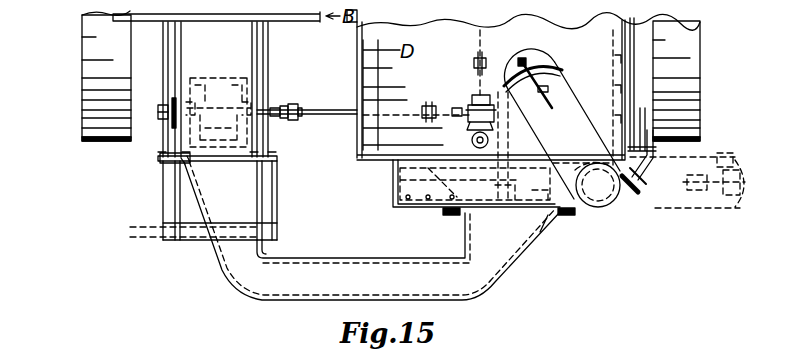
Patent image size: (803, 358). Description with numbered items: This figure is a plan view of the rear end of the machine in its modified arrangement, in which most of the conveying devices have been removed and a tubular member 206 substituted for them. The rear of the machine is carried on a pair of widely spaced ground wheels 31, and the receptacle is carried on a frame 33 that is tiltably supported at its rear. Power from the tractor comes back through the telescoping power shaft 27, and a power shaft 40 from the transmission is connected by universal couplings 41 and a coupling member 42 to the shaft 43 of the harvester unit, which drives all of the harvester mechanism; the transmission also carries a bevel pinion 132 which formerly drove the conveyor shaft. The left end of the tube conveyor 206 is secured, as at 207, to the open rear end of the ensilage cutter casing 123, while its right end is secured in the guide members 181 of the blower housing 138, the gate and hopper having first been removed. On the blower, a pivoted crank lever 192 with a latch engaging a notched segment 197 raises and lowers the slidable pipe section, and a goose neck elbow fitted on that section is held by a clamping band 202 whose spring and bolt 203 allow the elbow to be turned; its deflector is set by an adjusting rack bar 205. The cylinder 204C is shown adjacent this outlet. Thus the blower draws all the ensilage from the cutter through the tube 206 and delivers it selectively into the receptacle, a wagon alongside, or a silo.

The ground wheels 31 is at (90, 70).
The casing of the ensilage cutter 123 is at (187, 130).
The securing point of tube conveyor 207 is at (165, 163).
The shaft of the harvester unit 43 is at (183, 162).
The power shaft 40 is at (325, 115).
The universal couplings 41 is at (290, 120).
The coupling member 42 is at (283, 104).
The frame 33 is at (378, 42).
The power shaft 27 is at (478, 38).
The guides 181 is at (455, 215).
The cylinder 204C is at (609, 24).
The adjusting rack bar 205 is at (550, 90).
The crank lever 192 is at (640, 89).
The notched segment 197 is at (648, 125).
The bevel pinion 132 is at (652, 157).
The clamping band 202 is at (610, 205).
The spring and bolt 203 is at (638, 183).
The blower housing 138 is at (553, 216).
The tubular member 206 is at (292, 300).